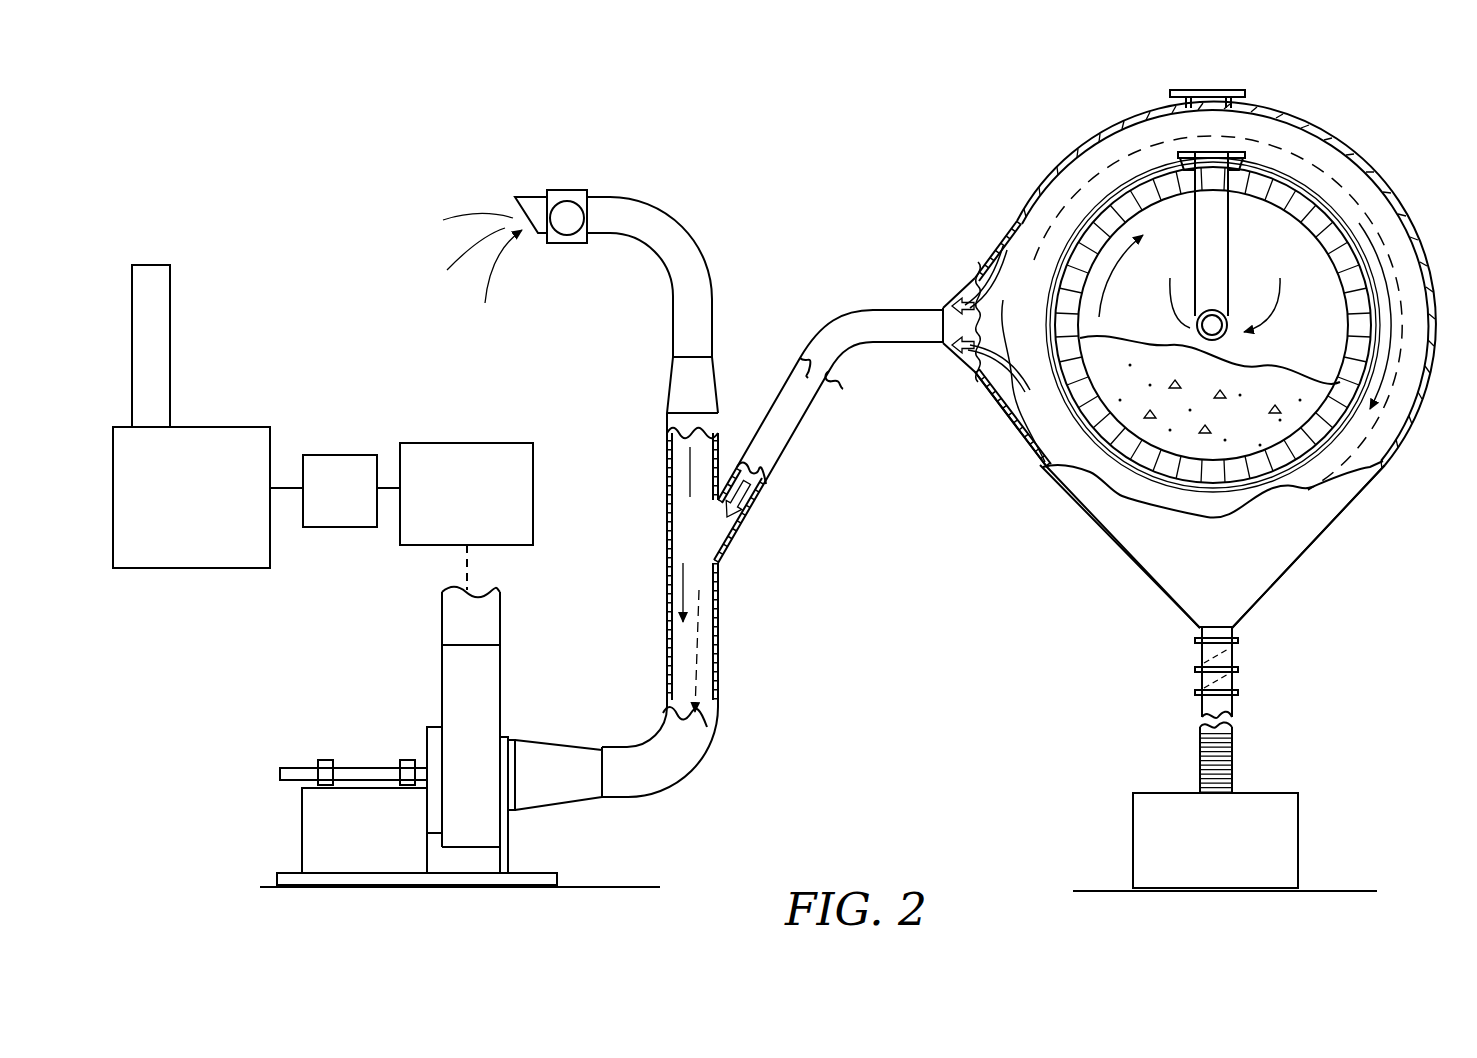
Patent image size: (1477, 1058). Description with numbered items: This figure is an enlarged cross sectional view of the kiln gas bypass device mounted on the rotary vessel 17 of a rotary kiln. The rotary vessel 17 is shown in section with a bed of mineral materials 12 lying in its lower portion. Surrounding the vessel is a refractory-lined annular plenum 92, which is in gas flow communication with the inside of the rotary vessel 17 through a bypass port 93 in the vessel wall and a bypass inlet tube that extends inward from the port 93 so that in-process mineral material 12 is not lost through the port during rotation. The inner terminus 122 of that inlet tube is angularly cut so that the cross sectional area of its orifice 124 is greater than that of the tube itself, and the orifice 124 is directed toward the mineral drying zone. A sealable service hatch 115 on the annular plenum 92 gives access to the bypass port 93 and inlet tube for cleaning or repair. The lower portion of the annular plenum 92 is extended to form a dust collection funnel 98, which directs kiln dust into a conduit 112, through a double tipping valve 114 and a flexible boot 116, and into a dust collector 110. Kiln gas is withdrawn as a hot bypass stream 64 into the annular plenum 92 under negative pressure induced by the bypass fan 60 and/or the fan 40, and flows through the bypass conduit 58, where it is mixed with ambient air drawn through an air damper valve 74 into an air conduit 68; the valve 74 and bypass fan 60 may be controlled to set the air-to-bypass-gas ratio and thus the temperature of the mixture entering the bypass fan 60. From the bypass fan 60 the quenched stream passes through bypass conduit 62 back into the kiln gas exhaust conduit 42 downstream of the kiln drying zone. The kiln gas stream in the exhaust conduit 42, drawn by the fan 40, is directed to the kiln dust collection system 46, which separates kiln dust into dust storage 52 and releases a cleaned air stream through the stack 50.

The mineral materials 12 is at (1265, 388).
The rotary vessel 17 is at (1236, 282).
The fan 40 is at (341, 472).
The kiln gas exhaust conduit 42 is at (481, 443).
The kiln dust collection system 46 is at (225, 428).
The stack 50 is at (157, 340).
The dust storage 52 is at (1213, 300).
The bypass conduit 58 is at (770, 410).
The bypass fan 60 is at (545, 827).
The bypass conduit 62 is at (500, 623).
The kiln gas bypass stream 64 is at (983, 286).
The air conduit 68 is at (703, 273).
The air damper valve 74 is at (568, 190).
The annular plenum 92 is at (1015, 221).
The bypass port 93 is at (1215, 150).
The dust collection funnel 98 is at (1285, 573).
The dust collector 110 is at (1298, 835).
The conduit 112 is at (1191, 678).
The double tipping valve 114 is at (1242, 662).
The sealable service hatch 115 is at (1200, 88).
The flexible boot 116 is at (1225, 772).
The inner terminus 122 is at (1188, 334).
The orifice 124 is at (1222, 337).